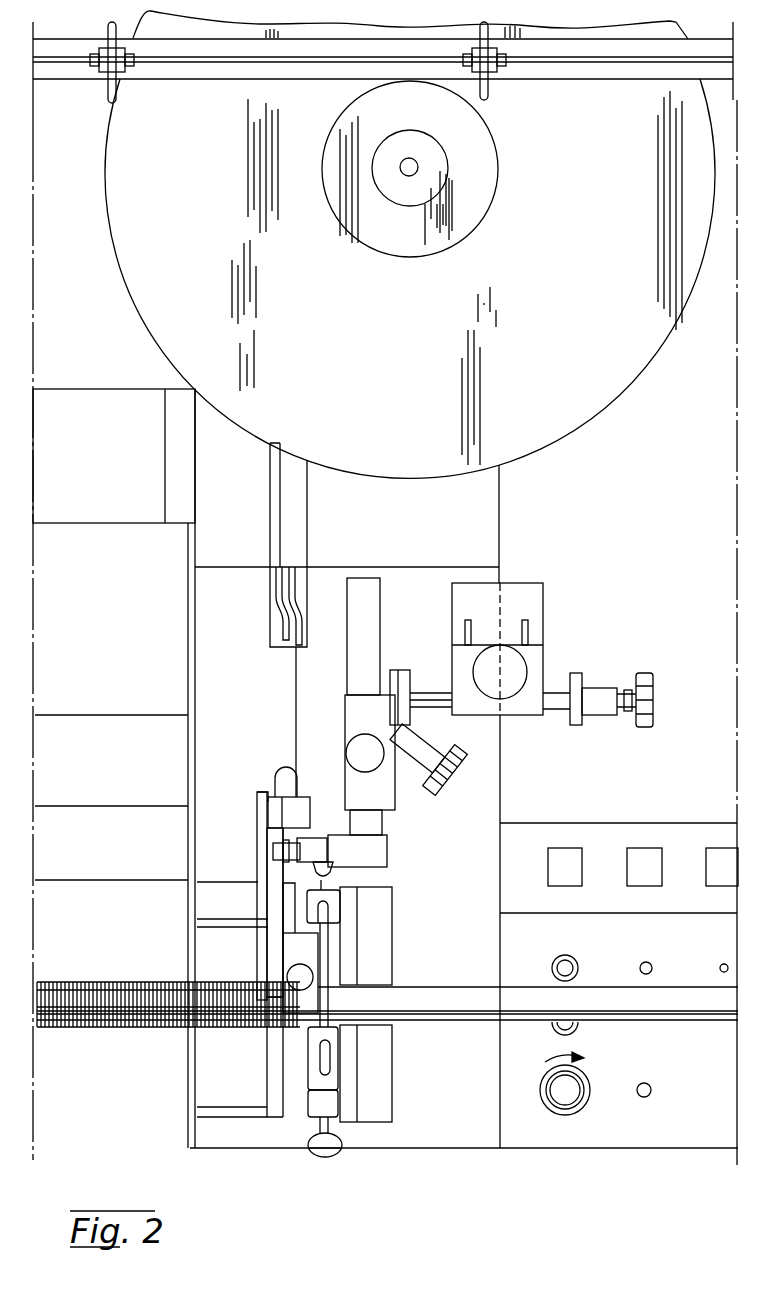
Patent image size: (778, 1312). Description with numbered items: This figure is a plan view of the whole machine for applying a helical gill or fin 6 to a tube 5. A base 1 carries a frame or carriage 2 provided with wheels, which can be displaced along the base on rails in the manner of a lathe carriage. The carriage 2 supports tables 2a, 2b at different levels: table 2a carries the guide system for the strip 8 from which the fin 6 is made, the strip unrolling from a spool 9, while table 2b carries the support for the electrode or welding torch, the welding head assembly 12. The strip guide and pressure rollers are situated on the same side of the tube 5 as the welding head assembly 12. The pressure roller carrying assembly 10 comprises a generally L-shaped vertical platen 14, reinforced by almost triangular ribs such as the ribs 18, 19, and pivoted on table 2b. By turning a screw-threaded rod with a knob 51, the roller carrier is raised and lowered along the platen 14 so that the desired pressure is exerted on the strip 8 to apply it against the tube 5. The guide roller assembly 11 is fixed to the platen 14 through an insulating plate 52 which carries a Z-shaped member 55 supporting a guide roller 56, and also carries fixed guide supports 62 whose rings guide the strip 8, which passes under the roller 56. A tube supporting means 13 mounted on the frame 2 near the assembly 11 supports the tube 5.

The base 1 is at (101, 683).
The frame or carriage 2 is at (505, 815).
The table 2a is at (482, 507).
The table 2b is at (476, 803).
The tube 5 is at (474, 1012).
The helical gill or fin 6 is at (122, 1027).
The strip 8 is at (270, 488).
The spool 9 is at (624, 369).
The pressure roller carrying assembly 10 is at (258, 959).
The guide roller assembly 11 is at (252, 802).
The welding head assembly 12 is at (429, 676).
The tube supporting means 13 is at (380, 972).
The vertical platen 14 is at (276, 1049).
The rib 18 is at (220, 1116).
The rib 19 is at (225, 925).
The knob 51 is at (300, 973).
The insulating plate 52 is at (258, 822).
The Z-shaped member 55 is at (265, 868).
The guide roller 56 is at (275, 850).
The fixed guide support 62 is at (302, 808).